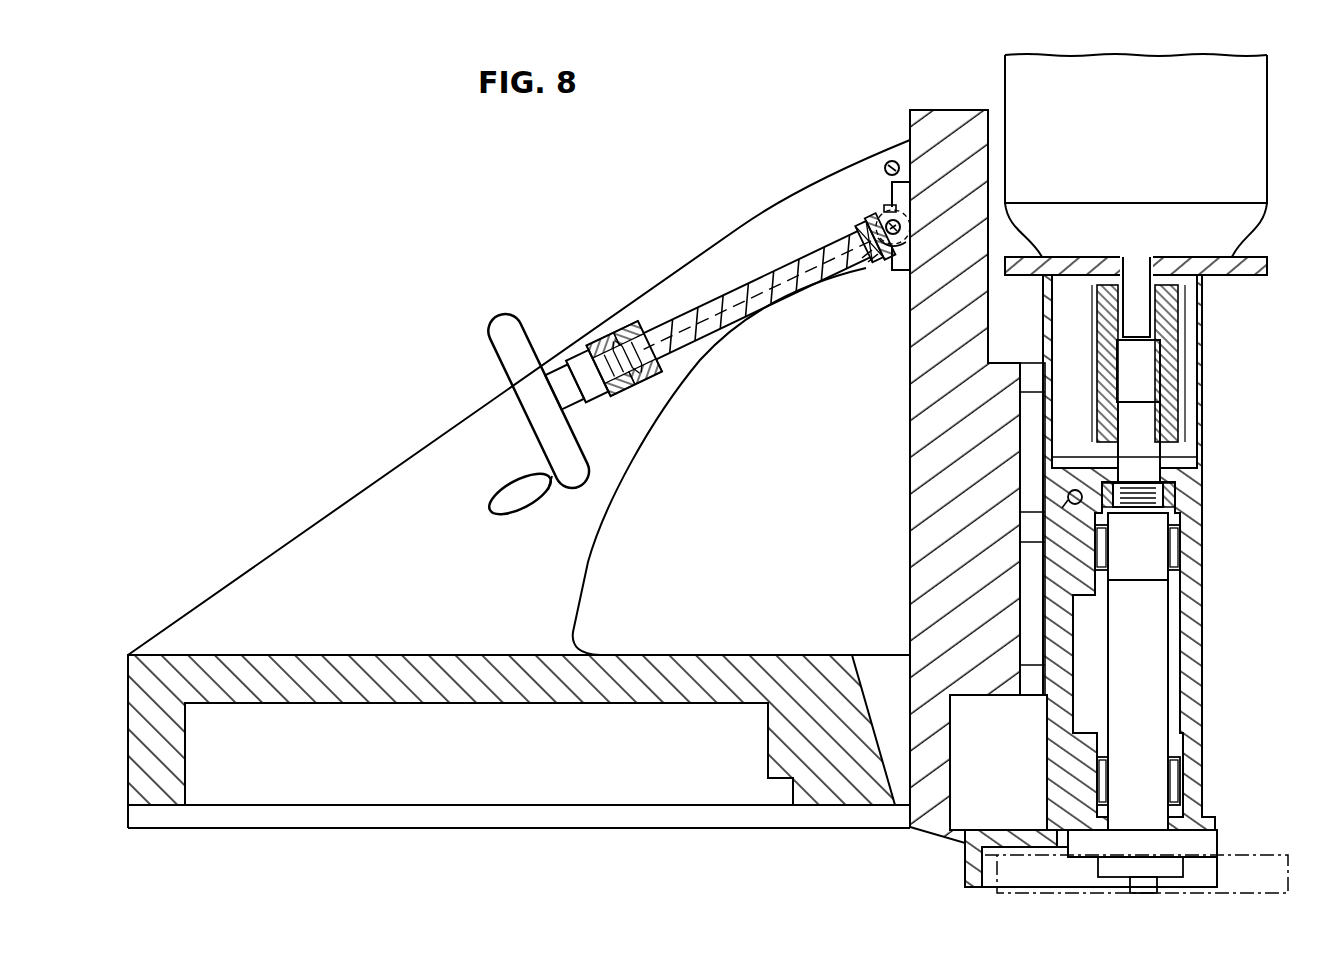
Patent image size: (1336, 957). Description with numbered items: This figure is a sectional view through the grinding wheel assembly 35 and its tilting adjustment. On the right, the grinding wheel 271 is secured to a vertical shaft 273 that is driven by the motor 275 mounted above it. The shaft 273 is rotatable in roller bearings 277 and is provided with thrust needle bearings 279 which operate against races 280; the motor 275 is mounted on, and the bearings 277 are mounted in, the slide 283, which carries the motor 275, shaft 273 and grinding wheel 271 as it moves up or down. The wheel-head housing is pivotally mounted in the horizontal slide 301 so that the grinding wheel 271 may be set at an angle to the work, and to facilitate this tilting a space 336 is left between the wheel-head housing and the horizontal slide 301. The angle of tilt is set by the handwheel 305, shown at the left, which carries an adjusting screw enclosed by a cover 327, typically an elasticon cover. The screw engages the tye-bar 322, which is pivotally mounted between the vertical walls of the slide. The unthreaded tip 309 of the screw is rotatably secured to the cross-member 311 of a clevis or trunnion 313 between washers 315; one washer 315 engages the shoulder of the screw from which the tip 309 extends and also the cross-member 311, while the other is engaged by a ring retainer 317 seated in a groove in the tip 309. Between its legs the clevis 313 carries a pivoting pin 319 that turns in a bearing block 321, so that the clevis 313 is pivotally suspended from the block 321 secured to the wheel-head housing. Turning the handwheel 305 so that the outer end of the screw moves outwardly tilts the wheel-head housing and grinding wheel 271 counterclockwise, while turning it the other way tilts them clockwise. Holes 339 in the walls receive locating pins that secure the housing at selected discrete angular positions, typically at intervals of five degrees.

The grinding wheel assembly 35 is at (959, 95).
The horizontal slide 301 is at (594, 720).
The handwheel 305 is at (497, 339).
The unthreaded tip 309 is at (873, 221).
The cross-member 311 is at (866, 262).
The clevis 313 is at (911, 296).
The washers 315 is at (858, 238).
The ring retainer 317 is at (896, 243).
The pivoting pin 319 is at (902, 223).
The bearing block 321 is at (889, 208).
The tye-bar 322 is at (607, 333).
The cover 327 is at (713, 303).
The space 336 is at (578, 594).
The holes 339 is at (891, 160).
The grinding wheel 271 is at (1252, 858).
The shaft 273 is at (1152, 432).
The motor 275 is at (1267, 119).
The roller bearings 277 is at (1178, 548).
The thrust needle bearings 279 is at (1190, 510).
The races 280 is at (1076, 505).
The slide 283 is at (1204, 605).